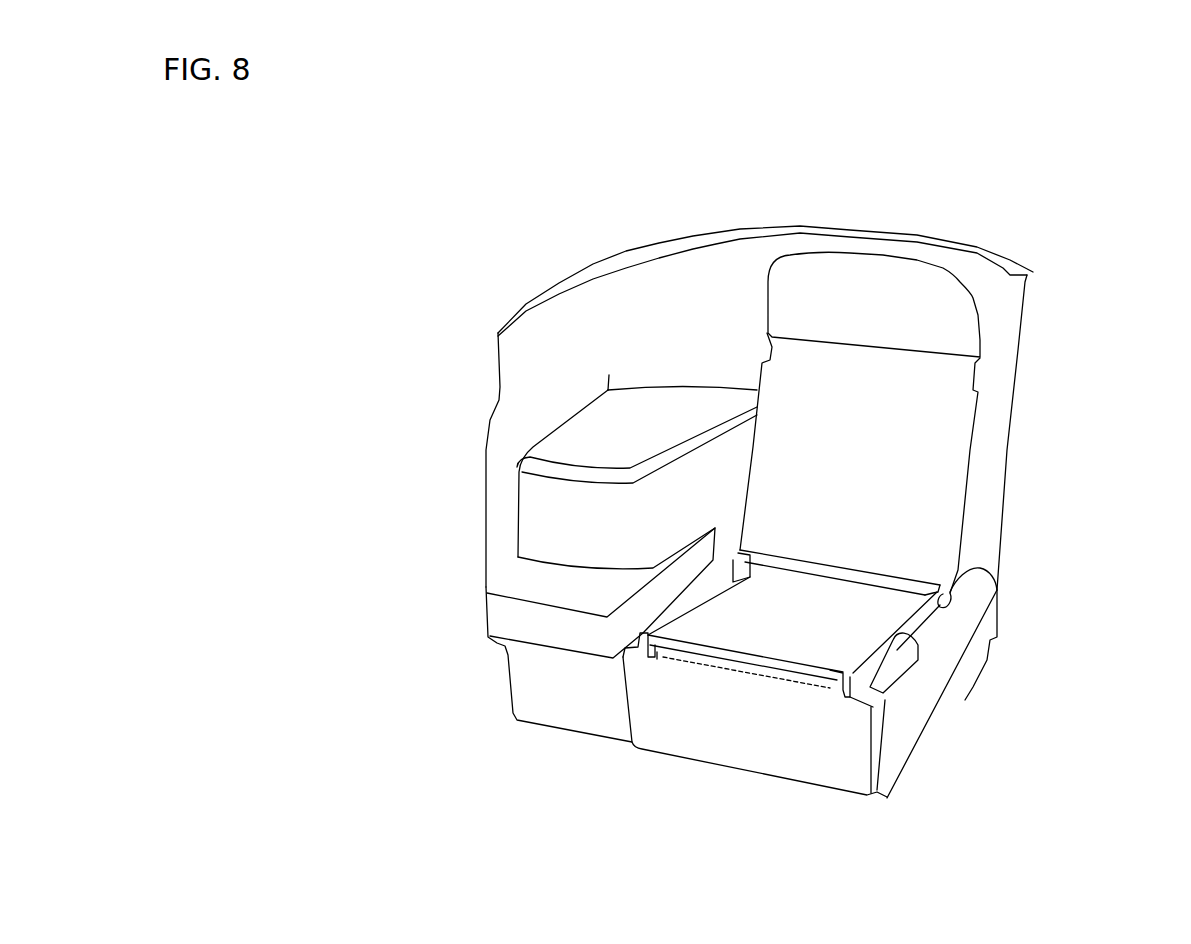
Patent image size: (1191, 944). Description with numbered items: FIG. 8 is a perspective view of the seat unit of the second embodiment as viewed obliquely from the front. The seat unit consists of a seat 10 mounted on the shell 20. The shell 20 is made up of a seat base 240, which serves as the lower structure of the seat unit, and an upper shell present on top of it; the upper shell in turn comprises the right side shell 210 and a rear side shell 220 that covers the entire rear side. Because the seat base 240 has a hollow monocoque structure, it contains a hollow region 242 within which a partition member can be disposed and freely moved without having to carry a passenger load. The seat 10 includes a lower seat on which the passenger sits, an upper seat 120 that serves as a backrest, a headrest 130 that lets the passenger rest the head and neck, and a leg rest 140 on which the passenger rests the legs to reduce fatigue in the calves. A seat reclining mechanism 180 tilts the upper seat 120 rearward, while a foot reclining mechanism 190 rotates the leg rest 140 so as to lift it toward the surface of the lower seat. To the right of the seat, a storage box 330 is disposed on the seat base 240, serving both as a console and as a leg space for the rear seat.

The seat 10 is at (830, 625).
The shell 20 is at (987, 207).
The upper seat 120 is at (938, 445).
The headrest 130 is at (966, 334).
The leg rest 140 is at (687, 742).
The seat reclining mechanism 180 is at (943, 597).
The foot reclining mechanism 190 is at (917, 672).
The right side shell 210 is at (500, 390).
The rear side shell 220 is at (843, 228).
The seat base 240 is at (933, 708).
The hollow region 242 is at (577, 695).
The storage box 330 is at (632, 445).